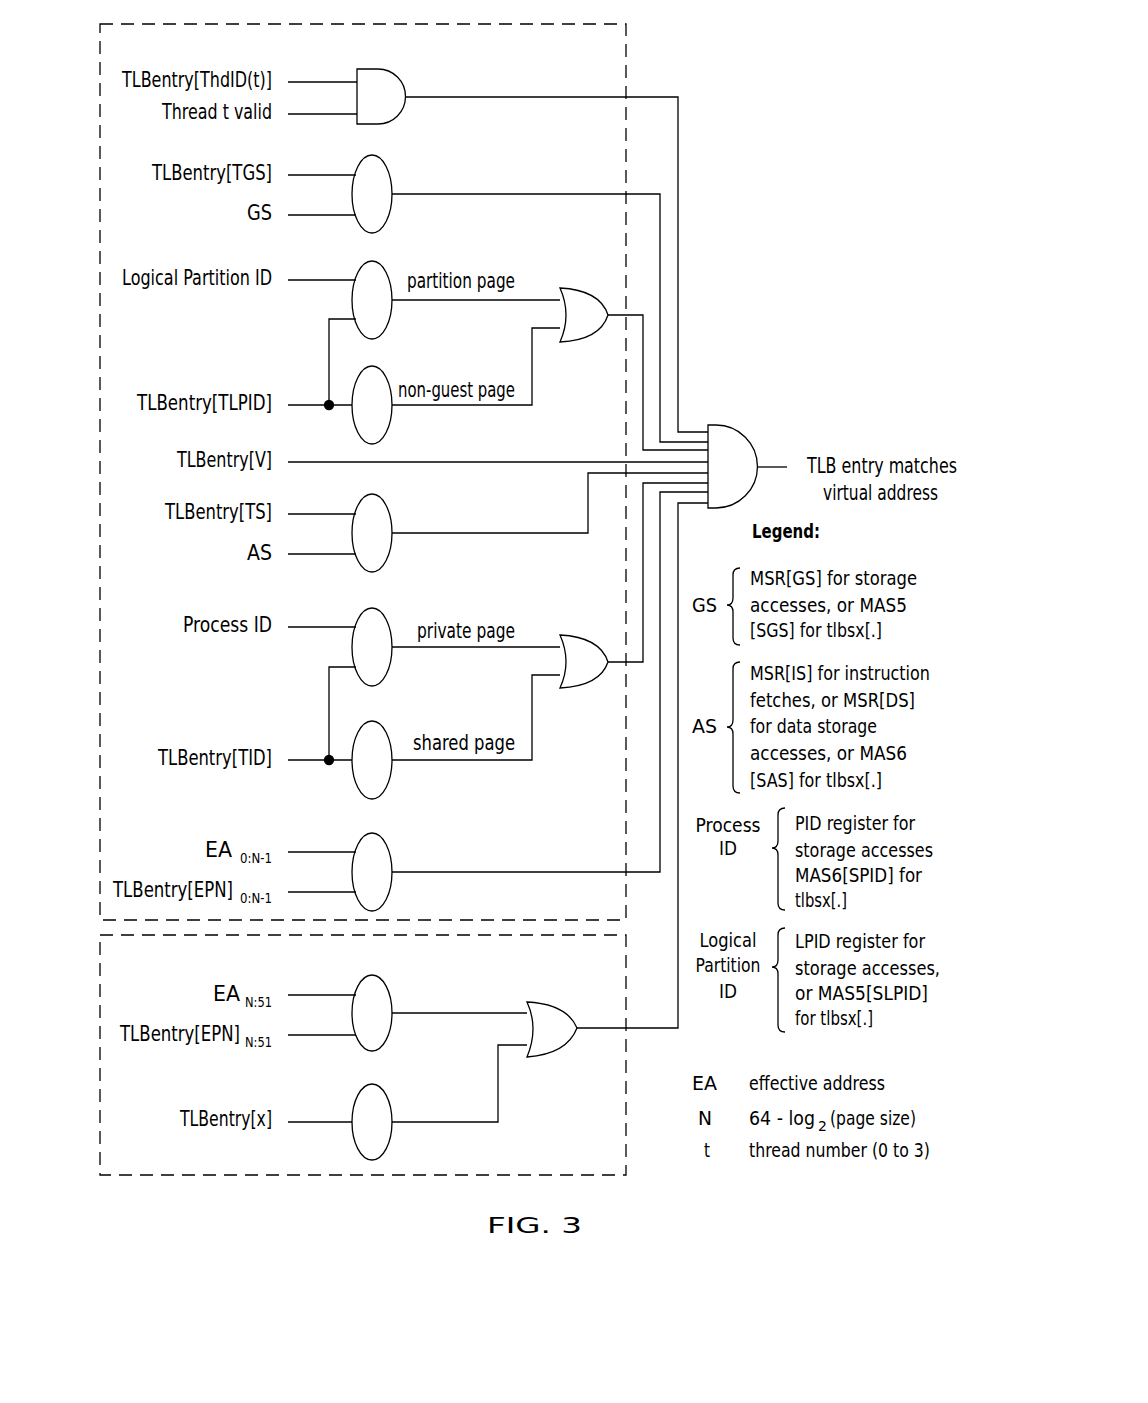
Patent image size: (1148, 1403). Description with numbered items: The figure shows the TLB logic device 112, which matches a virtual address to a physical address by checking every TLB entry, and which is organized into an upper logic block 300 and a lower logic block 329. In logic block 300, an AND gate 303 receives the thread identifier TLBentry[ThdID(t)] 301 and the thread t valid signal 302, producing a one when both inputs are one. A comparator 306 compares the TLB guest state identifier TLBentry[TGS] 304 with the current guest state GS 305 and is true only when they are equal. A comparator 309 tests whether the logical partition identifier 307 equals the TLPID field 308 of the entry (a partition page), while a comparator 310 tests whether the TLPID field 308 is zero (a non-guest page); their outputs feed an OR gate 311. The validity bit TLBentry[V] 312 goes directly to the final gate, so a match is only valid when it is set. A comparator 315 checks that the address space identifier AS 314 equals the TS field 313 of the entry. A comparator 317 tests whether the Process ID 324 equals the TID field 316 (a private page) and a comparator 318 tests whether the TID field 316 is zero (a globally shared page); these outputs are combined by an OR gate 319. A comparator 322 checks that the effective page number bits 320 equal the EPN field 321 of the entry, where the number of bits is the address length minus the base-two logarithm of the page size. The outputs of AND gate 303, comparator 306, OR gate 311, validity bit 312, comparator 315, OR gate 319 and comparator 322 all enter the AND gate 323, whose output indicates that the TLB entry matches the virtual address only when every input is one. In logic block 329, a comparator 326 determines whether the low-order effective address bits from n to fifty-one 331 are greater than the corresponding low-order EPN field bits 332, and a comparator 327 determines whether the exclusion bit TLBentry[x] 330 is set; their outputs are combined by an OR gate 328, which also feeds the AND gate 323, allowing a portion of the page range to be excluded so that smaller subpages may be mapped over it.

The TLB logic device 112 is at (847, 124).
The logic block 300 is at (626, 50).
The TLBentry[ThdID(t)] thread identifier input 301 is at (322, 69).
The thread t valid input 302 is at (322, 101).
The AND gate 303 is at (395, 70).
The TLBentry[TGS] input 304 is at (322, 162).
The GS input 305 is at (322, 202).
The comparator 306 is at (387, 163).
The logical partition identifier input 307 is at (322, 267).
The TLPID field input 308 is at (329, 355).
The comparator 309 is at (387, 269).
The comparator 310 is at (387, 374).
The OR gate 311 is at (580, 288).
The TLBentry[V] validity bit input 312 is at (498, 449).
The TS field input 313 is at (322, 501).
The address space identifier input 314 is at (322, 541).
The comparator 315 is at (387, 502).
The TID field input 316 is at (329, 704).
The comparator 317 is at (387, 616).
The comparator 318 is at (387, 729).
The OR gate 319 is at (580, 635).
The effective page number field input 320 is at (322, 839).
The EPN field input 321 is at (322, 879).
The comparator 322 is at (387, 841).
The AND gate 323 is at (742, 425).
The Process ID input 324 is at (322, 614).
The comparator 326 is at (387, 982).
The comparator 327 is at (387, 1091).
The OR gate 328 is at (562, 1002).
The logic block 329 is at (153, 1152).
The exclusion bit input 330 is at (320, 1109).
The effective address bits n:51 input 331 is at (322, 982).
The EPN field bits n:51 input 332 is at (322, 1022).